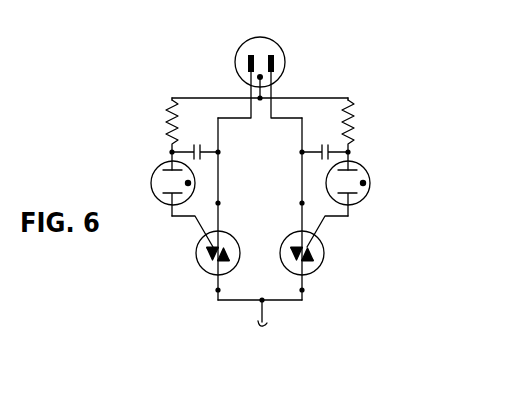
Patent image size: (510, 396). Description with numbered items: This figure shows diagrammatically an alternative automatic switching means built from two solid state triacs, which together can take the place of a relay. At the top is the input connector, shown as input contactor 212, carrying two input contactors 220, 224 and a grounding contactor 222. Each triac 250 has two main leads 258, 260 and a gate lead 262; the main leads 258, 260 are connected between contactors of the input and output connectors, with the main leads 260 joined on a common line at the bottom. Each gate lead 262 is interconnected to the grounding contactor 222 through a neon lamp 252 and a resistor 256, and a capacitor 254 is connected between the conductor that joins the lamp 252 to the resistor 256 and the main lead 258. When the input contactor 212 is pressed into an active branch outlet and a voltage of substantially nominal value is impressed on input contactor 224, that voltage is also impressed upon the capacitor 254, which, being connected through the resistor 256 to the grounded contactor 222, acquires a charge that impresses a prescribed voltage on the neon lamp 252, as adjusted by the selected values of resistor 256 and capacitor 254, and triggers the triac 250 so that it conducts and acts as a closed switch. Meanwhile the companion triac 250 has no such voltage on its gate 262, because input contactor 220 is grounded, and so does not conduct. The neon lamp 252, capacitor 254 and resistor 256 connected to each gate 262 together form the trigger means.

The input contactor 212 is at (258, 37).
The input contactor 220 is at (242, 53).
The grounding contactor 222 is at (275, 78).
The input contactor 224 is at (279, 53).
The triac 250 is at (196, 253).
The neon lamp 252 is at (151, 182).
The capacitor 254 is at (200, 147).
The resistor 256 is at (167, 129).
The main lead 258 is at (220, 203).
The main lead 260 is at (219, 290).
The gate lead 262 is at (330, 223).